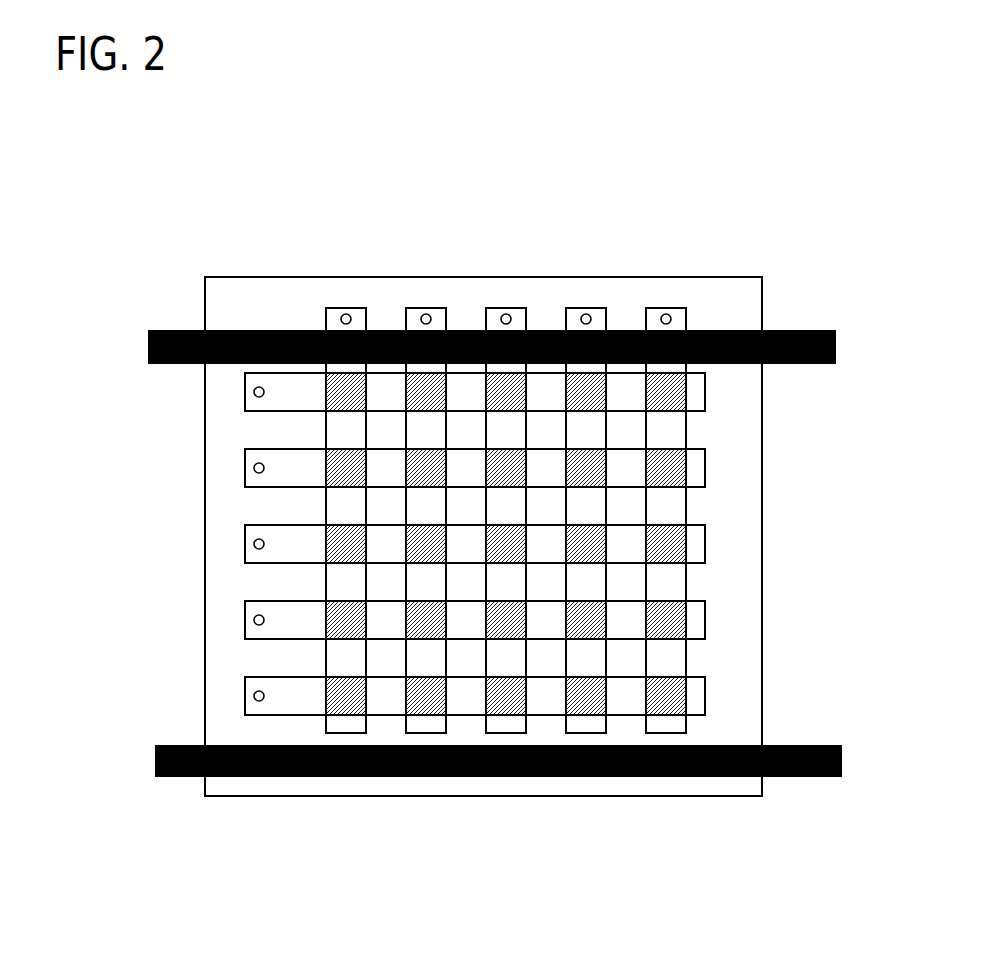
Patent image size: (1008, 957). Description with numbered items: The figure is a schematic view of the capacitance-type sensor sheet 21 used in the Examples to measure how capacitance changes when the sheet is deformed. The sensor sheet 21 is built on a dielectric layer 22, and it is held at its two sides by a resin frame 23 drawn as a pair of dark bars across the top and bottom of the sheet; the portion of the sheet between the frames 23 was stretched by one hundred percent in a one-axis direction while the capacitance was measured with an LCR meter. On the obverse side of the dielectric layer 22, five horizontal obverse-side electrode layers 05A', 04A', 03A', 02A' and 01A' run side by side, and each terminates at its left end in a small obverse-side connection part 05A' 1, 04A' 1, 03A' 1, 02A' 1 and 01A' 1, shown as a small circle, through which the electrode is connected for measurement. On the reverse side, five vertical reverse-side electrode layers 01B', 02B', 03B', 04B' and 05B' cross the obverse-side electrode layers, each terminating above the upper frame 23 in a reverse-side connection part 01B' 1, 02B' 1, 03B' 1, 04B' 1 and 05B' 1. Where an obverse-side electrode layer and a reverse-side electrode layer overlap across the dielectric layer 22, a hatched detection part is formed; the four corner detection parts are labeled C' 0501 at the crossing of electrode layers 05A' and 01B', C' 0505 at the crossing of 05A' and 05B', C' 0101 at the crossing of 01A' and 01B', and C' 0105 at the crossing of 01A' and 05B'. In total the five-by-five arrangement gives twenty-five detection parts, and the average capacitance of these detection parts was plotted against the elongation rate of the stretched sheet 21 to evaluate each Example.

The capacitance-type sensor sheet 21 is at (732, 105).
The dielectric layer 22 is at (195, 655).
The resin frame 23 is at (148, 350).
The obverse-side electrode layer 05A' is at (531, 395).
The obverse-side electrode layer 04A' is at (531, 471).
The obverse-side electrode layer 03A' is at (531, 547).
The obverse-side electrode layer 02A' is at (531, 623).
The obverse-side electrode layer 01A' is at (531, 699).
The obverse-side connection part 05A' 1 is at (198, 391).
The obverse-side connection part 04A' 1 is at (198, 467).
The obverse-side connection part 03A' 1 is at (198, 543).
The obverse-side connection part 02A' 1 is at (198, 619).
The obverse-side connection part 01A' 1 is at (198, 695).
The reverse-side electrode layer 01B' is at (352, 596).
The reverse-side electrode layer 02B' is at (433, 596).
The reverse-side electrode layer 03B' is at (515, 596).
The reverse-side electrode layer 04B' is at (596, 596).
The reverse-side electrode layer 05B' is at (678, 596).
The reverse-side connection part 01B' 1 is at (384, 271).
The reverse-side connection part 02B' 1 is at (460, 271).
The reverse-side connection part 03B' 1 is at (541, 271).
The reverse-side connection part 04B' 1 is at (621, 271).
The reverse-side connection part 05B' 1 is at (703, 271).
The detection part C' 0501 is at (282, 279).
The detection part C' 0505 is at (743, 275).
The detection part C' 0101 is at (290, 792).
The detection part C' 0105 is at (727, 792).